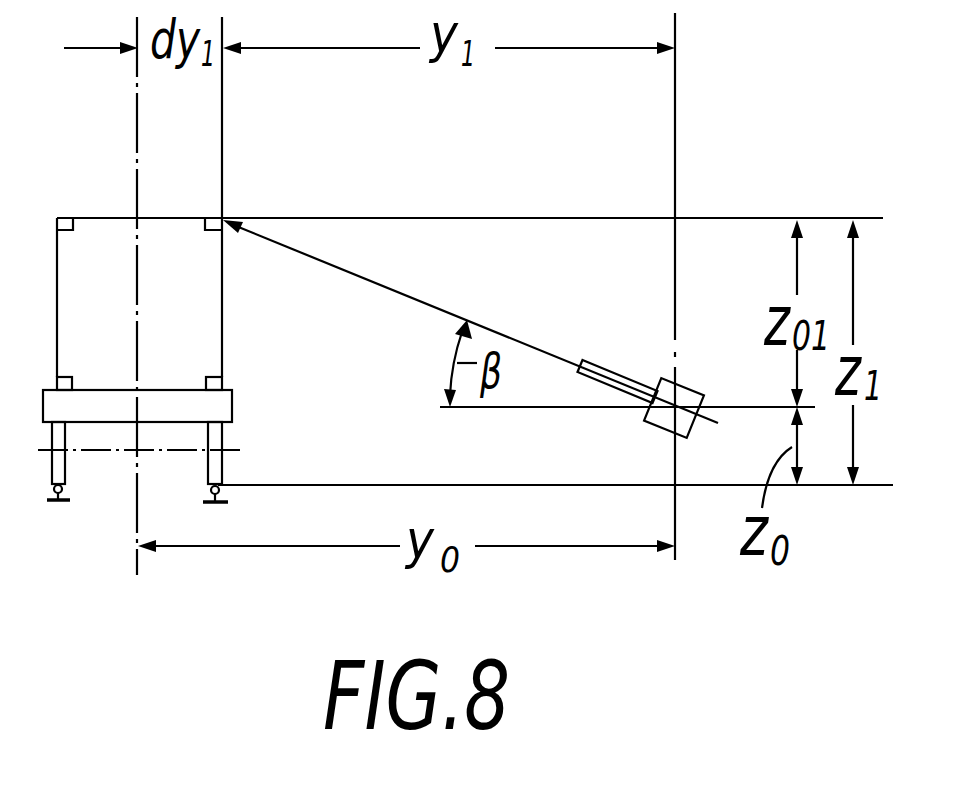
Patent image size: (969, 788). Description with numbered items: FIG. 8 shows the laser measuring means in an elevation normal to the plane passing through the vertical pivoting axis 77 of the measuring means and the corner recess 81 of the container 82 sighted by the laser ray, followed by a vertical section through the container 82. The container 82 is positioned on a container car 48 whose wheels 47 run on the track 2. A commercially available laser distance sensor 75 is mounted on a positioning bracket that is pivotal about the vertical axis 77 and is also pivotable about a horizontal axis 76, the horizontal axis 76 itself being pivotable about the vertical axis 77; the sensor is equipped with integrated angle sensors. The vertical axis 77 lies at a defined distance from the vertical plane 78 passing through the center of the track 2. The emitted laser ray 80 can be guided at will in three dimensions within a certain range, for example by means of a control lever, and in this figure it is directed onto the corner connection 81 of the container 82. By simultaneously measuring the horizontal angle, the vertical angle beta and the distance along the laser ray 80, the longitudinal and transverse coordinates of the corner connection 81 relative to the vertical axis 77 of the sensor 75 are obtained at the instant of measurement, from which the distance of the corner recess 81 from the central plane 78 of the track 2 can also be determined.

The track 2 is at (53, 515).
The wheels 47 is at (218, 468).
The container car 48 is at (86, 402).
The laser distance sensor 75 is at (611, 350).
The horizontal axis 76 is at (650, 428).
The vertical axis 77 is at (679, 306).
The vertical plane 78 is at (136, 532).
The laser ray 80 is at (354, 280).
The corner connection 81 is at (218, 216).
The container 82 is at (102, 232).